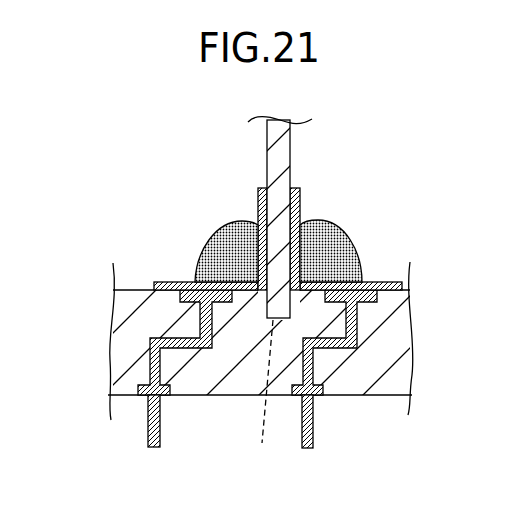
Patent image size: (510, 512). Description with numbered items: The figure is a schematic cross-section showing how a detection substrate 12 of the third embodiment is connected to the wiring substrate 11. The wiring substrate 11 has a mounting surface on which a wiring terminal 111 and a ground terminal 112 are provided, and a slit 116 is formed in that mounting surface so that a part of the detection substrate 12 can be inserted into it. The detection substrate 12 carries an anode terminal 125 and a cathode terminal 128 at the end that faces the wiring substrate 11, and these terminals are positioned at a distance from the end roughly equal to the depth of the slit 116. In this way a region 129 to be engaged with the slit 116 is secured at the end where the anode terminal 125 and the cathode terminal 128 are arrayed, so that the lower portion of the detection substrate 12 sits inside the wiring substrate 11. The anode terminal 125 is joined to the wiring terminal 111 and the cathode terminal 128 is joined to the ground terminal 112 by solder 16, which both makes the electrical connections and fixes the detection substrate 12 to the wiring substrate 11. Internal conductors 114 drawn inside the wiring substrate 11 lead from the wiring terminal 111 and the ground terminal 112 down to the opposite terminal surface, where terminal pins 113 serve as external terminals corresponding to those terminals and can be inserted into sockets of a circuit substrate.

The wiring substrate 11 is at (377, 396).
The detection substrate 12 is at (292, 146).
The solder 16 is at (212, 231).
The wiring terminal 111 is at (167, 281).
The ground terminal 112 is at (390, 281).
The terminal pin 113 is at (149, 432).
The internal wiring conductor 114 is at (150, 340).
The slit 116 is at (266, 320).
The anode terminal 125 is at (258, 194).
The cathode terminal 128 is at (303, 200).
The region to be engaged with the slit 129 is at (261, 396).